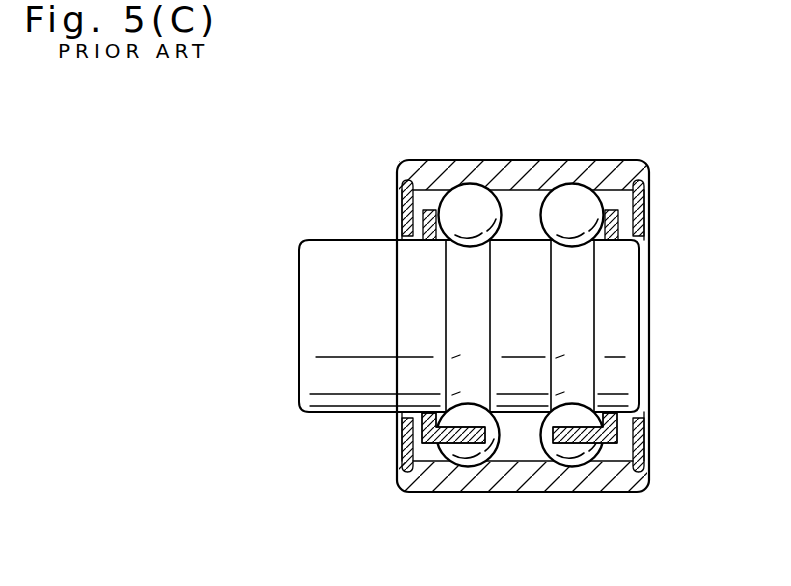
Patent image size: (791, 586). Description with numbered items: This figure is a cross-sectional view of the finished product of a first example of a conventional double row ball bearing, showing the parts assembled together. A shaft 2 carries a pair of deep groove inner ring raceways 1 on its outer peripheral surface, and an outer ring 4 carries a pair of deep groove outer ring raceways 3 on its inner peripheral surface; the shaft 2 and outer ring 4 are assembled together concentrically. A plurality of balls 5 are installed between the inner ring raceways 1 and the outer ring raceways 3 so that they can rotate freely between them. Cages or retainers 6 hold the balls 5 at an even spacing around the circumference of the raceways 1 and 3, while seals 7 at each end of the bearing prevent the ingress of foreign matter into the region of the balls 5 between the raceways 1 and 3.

The inner ring raceways 1 is at (567, 260).
The shaft 2 is at (522, 257).
The outer ring raceways 3 is at (468, 187).
The outer ring 4 is at (462, 167).
The balls 5 is at (463, 202).
The cages or retainers 6 is at (620, 220).
The seals 7 is at (403, 208).